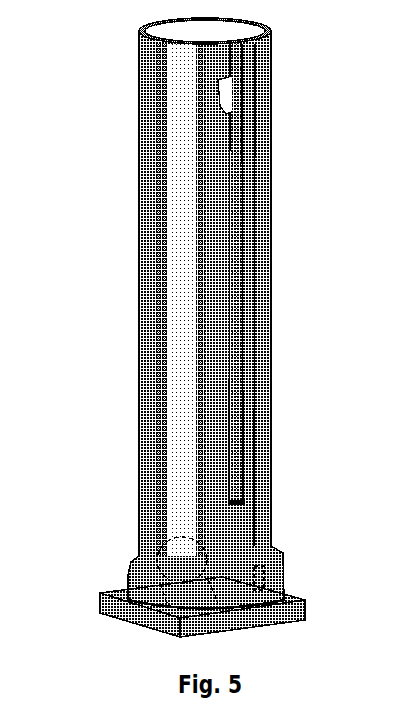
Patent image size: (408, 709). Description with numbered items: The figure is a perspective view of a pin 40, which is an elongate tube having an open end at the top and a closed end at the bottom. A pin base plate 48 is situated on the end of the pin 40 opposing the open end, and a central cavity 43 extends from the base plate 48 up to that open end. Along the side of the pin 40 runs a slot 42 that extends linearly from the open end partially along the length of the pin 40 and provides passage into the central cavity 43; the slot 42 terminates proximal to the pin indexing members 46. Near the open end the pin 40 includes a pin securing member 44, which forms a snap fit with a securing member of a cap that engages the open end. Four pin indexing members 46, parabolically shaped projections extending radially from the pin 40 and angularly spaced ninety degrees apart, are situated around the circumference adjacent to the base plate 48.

The pin 40 is at (189, 327).
The slot 42 is at (237, 253).
The central cavity 43 is at (232, 24).
The pin securing member 44 is at (240, 97).
The pin indexing members 46 is at (248, 602).
The pin base plate 48 is at (98, 605).